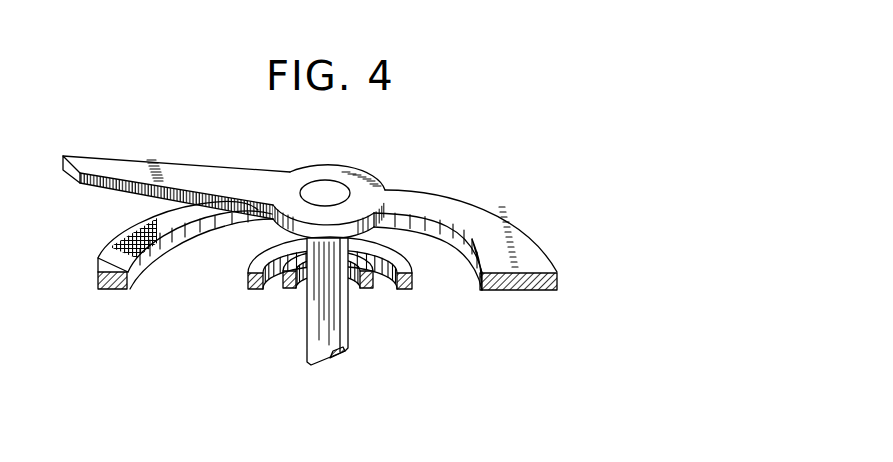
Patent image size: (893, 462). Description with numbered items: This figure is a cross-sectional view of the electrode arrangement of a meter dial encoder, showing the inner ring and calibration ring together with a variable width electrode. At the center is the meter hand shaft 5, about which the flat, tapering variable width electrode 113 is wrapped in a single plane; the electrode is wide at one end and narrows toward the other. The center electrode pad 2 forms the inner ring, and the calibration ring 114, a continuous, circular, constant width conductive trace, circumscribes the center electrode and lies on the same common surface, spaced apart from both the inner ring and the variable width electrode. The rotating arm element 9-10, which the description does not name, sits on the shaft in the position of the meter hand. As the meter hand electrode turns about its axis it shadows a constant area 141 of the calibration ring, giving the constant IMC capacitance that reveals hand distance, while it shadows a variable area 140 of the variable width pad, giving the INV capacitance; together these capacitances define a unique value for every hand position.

The switch arm 9-10 is at (112, 158).
The variable shadowed area 140 is at (118, 249).
The variable width electrode 113 is at (557, 283).
The constant shadowed area 141 is at (260, 254).
The calibration ring 114 is at (255, 291).
The center electrode pad 2 is at (293, 292).
The meter hand shaft 5 is at (348, 333).